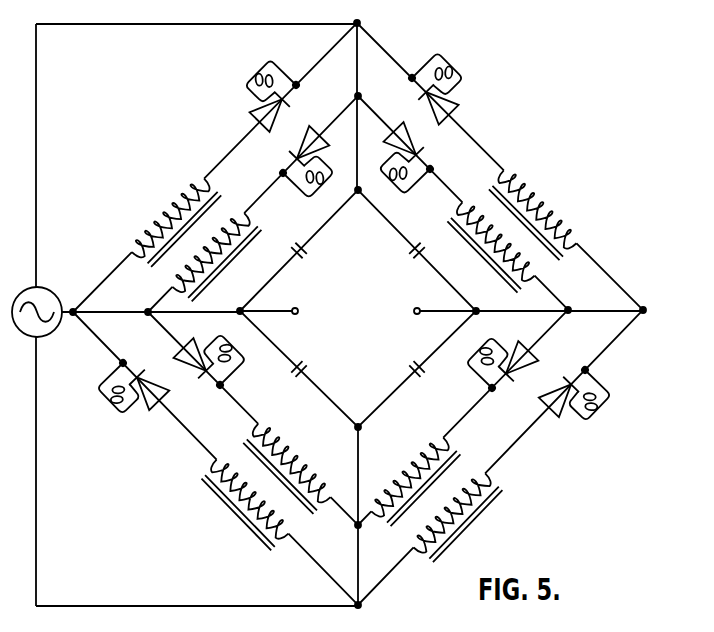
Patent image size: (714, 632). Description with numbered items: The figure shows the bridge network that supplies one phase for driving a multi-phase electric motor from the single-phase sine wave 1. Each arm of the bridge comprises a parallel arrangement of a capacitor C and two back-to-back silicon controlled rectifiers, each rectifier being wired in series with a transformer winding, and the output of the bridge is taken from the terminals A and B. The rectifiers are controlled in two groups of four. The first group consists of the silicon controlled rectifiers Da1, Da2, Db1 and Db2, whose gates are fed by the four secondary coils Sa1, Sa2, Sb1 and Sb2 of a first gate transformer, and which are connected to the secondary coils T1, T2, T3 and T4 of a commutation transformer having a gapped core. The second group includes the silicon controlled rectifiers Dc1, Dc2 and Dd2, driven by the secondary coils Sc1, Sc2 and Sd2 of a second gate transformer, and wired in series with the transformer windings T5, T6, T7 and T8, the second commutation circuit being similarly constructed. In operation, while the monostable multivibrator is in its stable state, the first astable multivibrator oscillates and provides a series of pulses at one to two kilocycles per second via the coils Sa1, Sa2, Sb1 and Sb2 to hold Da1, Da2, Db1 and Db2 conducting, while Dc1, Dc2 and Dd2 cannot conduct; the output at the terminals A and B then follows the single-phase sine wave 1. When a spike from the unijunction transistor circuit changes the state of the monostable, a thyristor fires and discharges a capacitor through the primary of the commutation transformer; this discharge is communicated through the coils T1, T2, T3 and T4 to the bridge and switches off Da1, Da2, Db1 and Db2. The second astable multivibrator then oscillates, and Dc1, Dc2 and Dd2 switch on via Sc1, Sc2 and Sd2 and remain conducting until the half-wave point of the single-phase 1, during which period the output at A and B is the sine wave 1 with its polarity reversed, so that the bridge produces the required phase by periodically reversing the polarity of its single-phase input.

The single-phase sine wave 1 is at (62, 279).
The secondary coil Sc1 is at (249, 84).
The silicon controlled rectifier Dc1 is at (253, 114).
The secondary coil Sa1 is at (456, 73).
The silicon controlled rectifier Da1 is at (458, 109).
The secondary coil Sc2 is at (305, 196).
The silicon controlled rectifier Dc2 is at (282, 173).
The secondary coil Sa2 is at (424, 196).
The silicon controlled rectifier Da2 is at (410, 137).
The secondary coil Sb1 is at (237, 371).
The silicon controlled rectifier Db1 is at (181, 355).
The secondary coil Sb2 is at (106, 382).
The silicon controlled rectifier Db2 is at (163, 412).
The secondary coil Sd2 is at (606, 394).
The silicon controlled rectifier Dd2 is at (557, 418).
The secondary coil T1 is at (524, 192).
The secondary coil T2 is at (498, 268).
The secondary coil T3 is at (290, 447).
The secondary coil T4 is at (280, 516).
The transformer winding T5 is at (181, 198).
The transformer winding T6 is at (219, 266).
The transformer winding T7 is at (428, 447).
The transformer winding T8 is at (457, 530).
The capacitor C is at (358, 313).
The output terminal A is at (431, 312).
The output terminal B is at (278, 312).